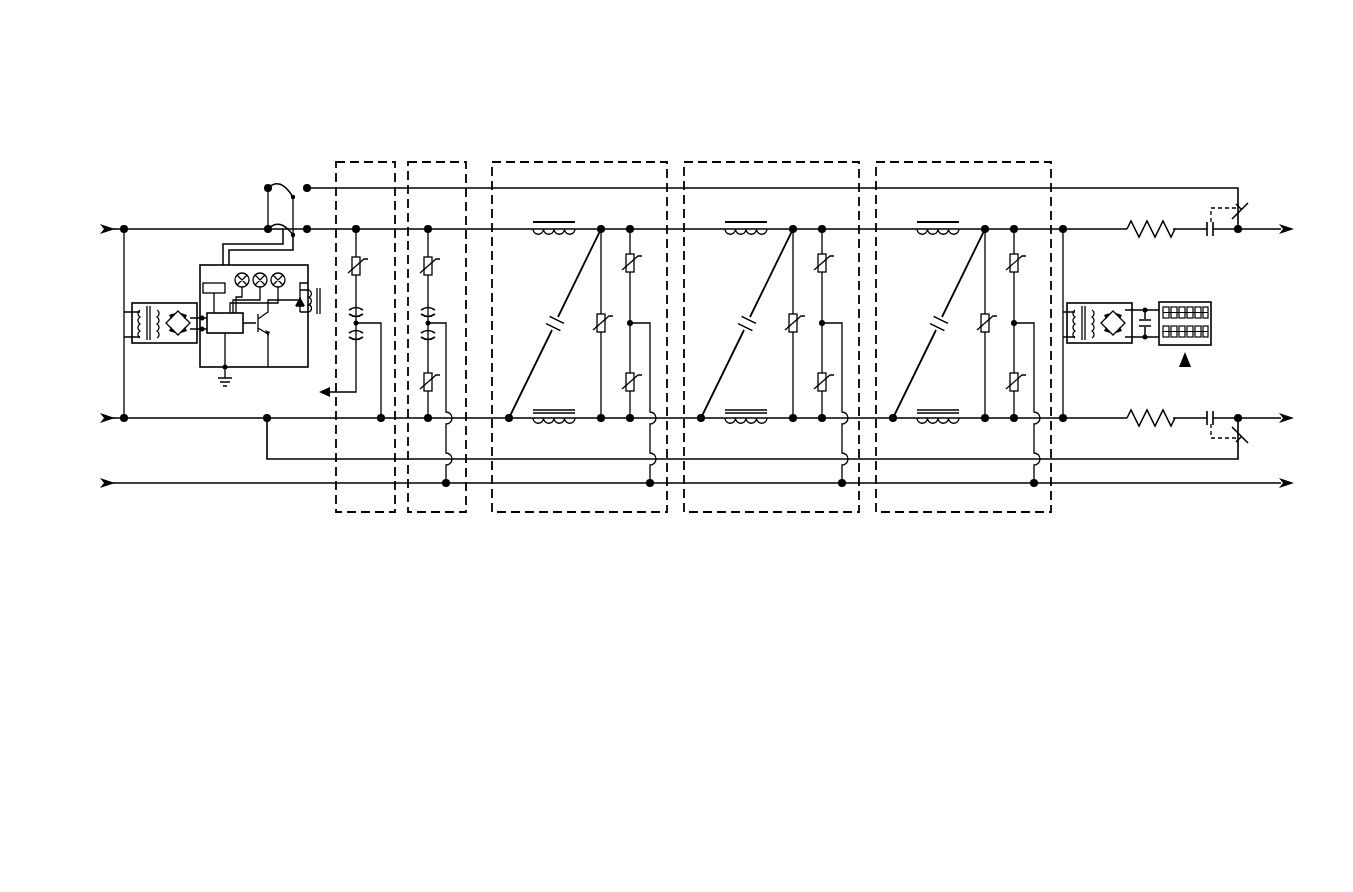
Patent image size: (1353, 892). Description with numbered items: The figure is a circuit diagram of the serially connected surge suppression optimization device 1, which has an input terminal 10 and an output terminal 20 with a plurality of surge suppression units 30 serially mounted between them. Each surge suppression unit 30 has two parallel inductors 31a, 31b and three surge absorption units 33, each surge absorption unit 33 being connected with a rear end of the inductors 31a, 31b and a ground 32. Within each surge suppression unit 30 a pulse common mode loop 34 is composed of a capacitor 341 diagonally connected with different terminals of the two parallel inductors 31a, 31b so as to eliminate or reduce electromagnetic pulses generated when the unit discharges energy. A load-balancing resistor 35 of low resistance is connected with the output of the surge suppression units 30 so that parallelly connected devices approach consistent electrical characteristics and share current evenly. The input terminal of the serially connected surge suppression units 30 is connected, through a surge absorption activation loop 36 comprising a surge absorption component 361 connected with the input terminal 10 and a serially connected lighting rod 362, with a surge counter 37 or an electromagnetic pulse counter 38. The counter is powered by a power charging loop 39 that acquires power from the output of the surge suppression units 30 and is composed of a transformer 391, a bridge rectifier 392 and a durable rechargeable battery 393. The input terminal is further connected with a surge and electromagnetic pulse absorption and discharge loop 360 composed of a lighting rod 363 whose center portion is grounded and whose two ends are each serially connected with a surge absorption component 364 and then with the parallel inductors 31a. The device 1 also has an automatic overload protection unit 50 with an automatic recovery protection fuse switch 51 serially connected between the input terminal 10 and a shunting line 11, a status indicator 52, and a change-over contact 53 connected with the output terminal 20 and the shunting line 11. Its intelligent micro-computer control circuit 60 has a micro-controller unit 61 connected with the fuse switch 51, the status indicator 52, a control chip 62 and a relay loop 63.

The serially connected surge suppression optimization device 1 is at (904, 52).
The input terminal 10 is at (107, 215).
The shunting line 11 is at (1087, 188).
The output terminal 20 is at (1297, 213).
The surge suppression unit 30 is at (533, 512).
The inductor 31a is at (556, 210).
The inductor 31b is at (748, 210).
The ground 32 is at (1233, 486).
The surge absorption unit 33 is at (647, 258).
The pulse common mode loop 34 is at (535, 298).
The capacitor 341 is at (565, 325).
The load-balancing resistor 35 is at (1148, 222).
The surge absorption activation loop 36 is at (365, 512).
The surge and electromagnetic pulse absorption and discharge loop 360 is at (437, 512).
The surge absorption component 361 is at (345, 243).
The lighting rod 362 is at (370, 317).
The lighting rod 363 is at (442, 317).
The surge absorption component 364 is at (417, 243).
The surge counter 37 is at (1211, 322).
The electromagnetic pulse counter 38 is at (1185, 331).
The power charging loop 39 is at (1136, 280).
The transformer 391 is at (1085, 345).
The bridge rectifier 392 is at (1113, 345).
The durable rechargeable battery 393 is at (1149, 332).
The automatic overload protection unit 50 is at (249, 112).
The automatic recovery protection fuse switch 51 is at (274, 178).
The status indicator 52 is at (257, 268).
The change-over contact 53 is at (1253, 208).
The intelligent micro-computer control circuit 60 is at (207, 562).
The micro-controller unit 61 is at (215, 340).
The control chip 62 is at (257, 340).
The relay loop 63 is at (318, 317).